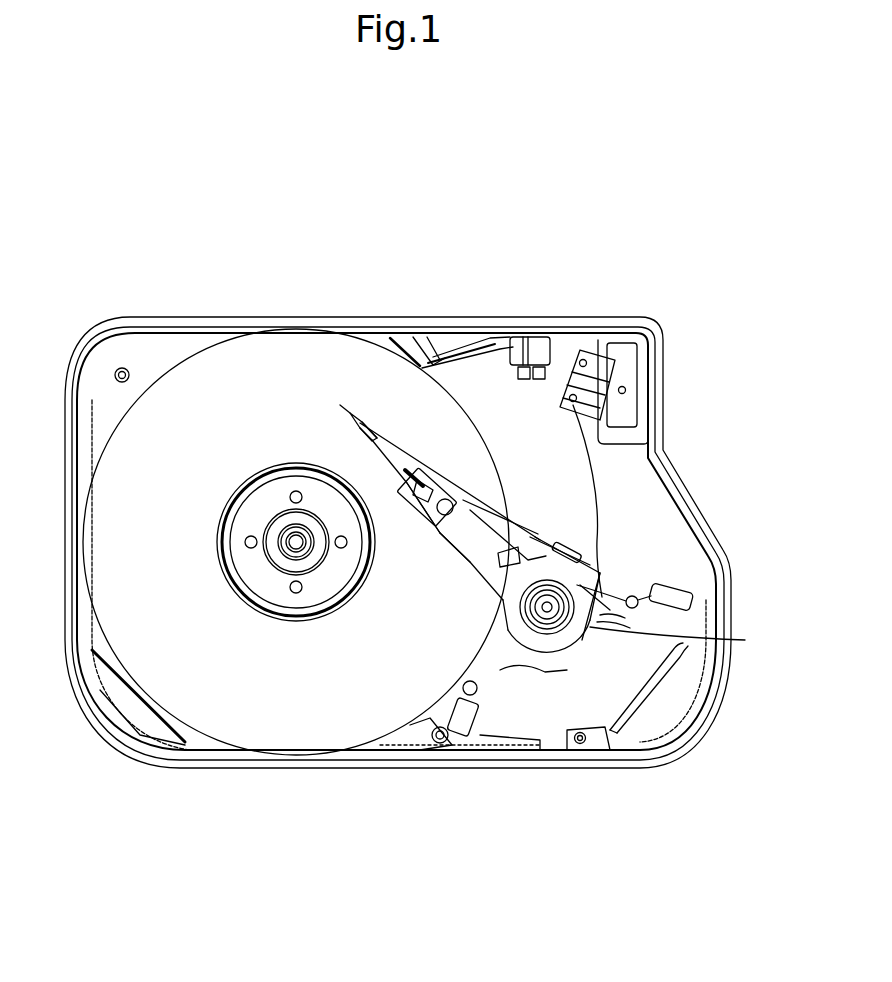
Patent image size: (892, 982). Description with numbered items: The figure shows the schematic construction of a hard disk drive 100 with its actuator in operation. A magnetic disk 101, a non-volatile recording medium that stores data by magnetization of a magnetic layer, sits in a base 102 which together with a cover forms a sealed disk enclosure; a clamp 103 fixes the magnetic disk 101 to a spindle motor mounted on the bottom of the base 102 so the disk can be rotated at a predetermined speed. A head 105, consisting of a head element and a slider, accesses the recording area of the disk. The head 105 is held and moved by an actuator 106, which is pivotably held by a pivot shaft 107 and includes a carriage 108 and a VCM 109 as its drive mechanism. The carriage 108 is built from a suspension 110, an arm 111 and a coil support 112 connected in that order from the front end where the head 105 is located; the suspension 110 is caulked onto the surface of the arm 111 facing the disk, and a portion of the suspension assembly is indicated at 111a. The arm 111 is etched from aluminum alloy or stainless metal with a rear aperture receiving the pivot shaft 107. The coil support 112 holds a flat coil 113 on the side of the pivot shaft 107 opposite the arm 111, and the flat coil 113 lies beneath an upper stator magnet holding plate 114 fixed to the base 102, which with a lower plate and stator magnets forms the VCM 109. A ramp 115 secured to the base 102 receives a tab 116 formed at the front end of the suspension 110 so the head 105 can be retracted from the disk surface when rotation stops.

The hard disk drive 100 is at (397, 285).
The magnetic disk 101 is at (262, 358).
The base 102 is at (662, 359).
The clamp 103 is at (275, 588).
The head 105 is at (360, 445).
The actuator 106 is at (556, 492).
The pivot shaft 107 is at (544, 607).
The carriage 108 is at (480, 450).
The VCM (voice coil motor) 109 is at (685, 690).
The suspension 110 is at (415, 417).
The arm 111 is at (467, 553).
The suspension load beam 111a is at (450, 543).
The coil support 112 is at (667, 590).
The flat coil 113 is at (679, 616).
The upper stator magnet holding plate 114 is at (549, 727).
The ramp 115 is at (528, 337).
The tab 116 is at (350, 413).